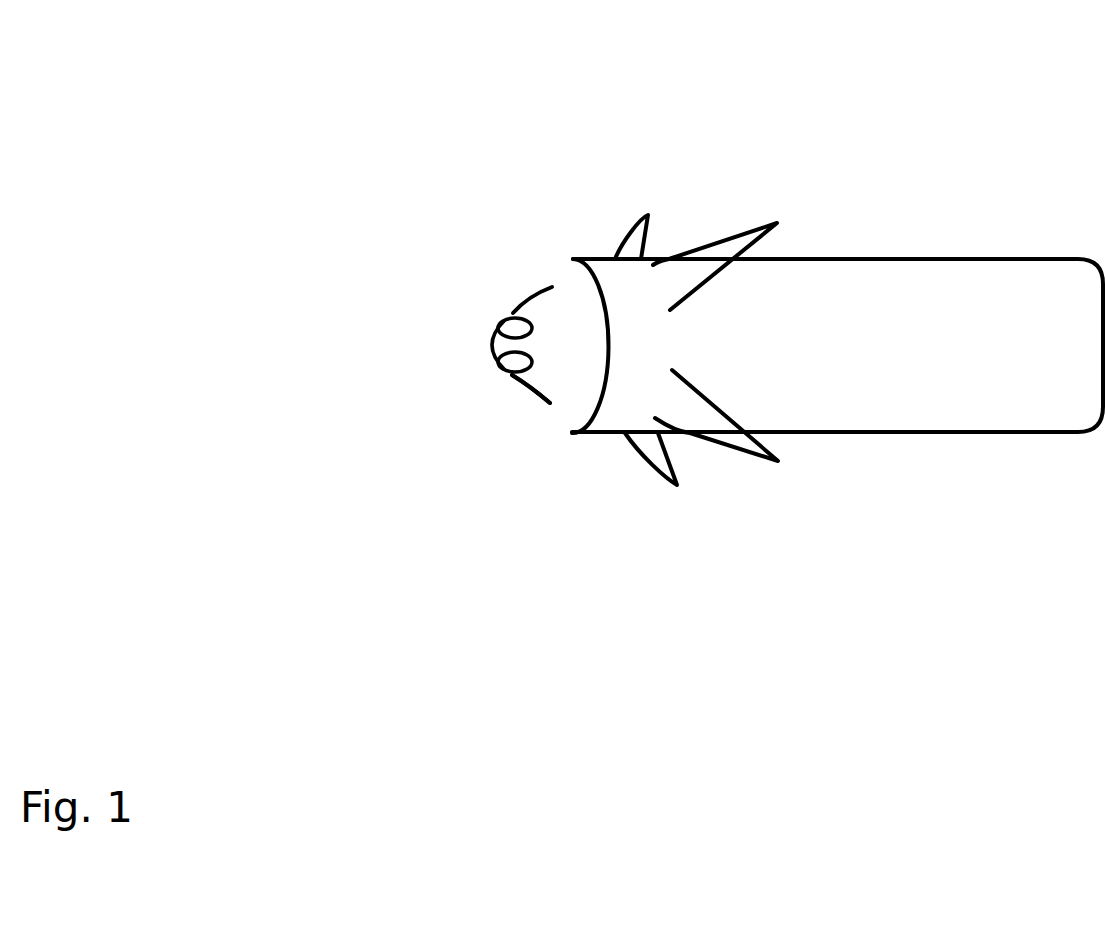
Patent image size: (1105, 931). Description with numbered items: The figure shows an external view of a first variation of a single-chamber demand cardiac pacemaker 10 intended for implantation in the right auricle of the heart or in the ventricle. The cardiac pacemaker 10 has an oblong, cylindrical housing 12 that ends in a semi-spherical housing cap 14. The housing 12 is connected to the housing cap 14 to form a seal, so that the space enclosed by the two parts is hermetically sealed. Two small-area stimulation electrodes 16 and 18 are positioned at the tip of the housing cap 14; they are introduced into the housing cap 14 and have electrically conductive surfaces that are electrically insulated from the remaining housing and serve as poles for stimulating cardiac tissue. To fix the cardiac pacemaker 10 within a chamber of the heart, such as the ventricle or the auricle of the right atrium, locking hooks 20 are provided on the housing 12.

The cardiac pacemaker 10 is at (876, 498).
The housing 12 is at (958, 258).
The housing cap 14 is at (555, 287).
The stimulation electrode 16 is at (512, 376).
The stimulation electrode 18 is at (513, 317).
The locking hooks 20 is at (770, 225).